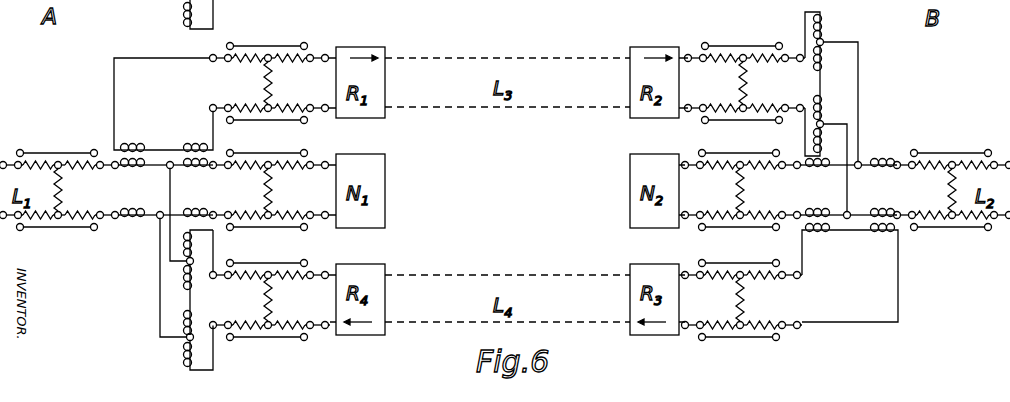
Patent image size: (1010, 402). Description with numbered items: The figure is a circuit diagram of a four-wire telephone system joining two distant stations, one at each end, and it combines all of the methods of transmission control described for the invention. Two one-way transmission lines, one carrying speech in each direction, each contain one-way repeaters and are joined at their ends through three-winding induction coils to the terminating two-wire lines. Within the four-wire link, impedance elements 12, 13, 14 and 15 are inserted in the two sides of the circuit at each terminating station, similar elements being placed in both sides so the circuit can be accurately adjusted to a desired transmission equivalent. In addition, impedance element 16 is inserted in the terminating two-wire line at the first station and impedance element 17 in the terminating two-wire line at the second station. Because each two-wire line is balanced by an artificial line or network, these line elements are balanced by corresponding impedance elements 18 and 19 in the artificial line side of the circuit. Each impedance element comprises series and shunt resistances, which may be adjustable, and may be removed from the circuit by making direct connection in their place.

The impedance element 12 is at (264, 82).
The impedance element 13 is at (744, 298).
The impedance element 14 is at (746, 82).
The impedance element 15 is at (264, 298).
The impedance element 16 is at (62, 190).
The impedance element 17 is at (948, 190).
The impedance element 18 is at (271, 190).
The impedance element 19 is at (744, 190).